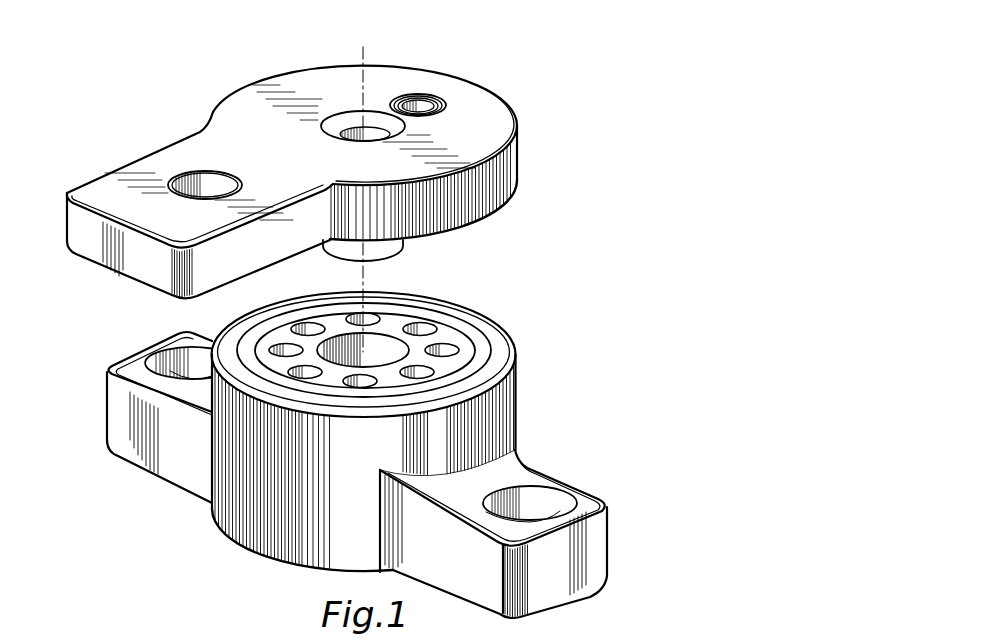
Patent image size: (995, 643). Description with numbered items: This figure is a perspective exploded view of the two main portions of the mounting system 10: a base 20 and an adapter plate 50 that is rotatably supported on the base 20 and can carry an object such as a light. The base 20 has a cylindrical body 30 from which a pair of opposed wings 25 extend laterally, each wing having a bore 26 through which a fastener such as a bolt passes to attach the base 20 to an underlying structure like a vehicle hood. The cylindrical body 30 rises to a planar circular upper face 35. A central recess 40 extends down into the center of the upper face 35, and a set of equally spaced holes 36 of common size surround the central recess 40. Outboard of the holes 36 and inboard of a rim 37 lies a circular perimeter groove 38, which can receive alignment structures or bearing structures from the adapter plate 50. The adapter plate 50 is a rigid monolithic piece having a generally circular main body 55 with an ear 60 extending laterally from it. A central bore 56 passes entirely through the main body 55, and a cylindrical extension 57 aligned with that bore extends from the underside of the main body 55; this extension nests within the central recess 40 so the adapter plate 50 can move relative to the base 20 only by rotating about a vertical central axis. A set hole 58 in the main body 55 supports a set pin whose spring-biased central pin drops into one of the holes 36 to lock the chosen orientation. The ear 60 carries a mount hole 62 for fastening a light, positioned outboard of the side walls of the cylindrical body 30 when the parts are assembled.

The mounting system 10 is at (612, 260).
The base 20 is at (233, 557).
The wings 25 is at (113, 420).
The bores 26 is at (160, 362).
The cylindrical body 30 is at (508, 412).
The upper face 35 is at (282, 335).
The holes 36 is at (447, 348).
The rim 37 is at (478, 325).
The perimeter groove 38 is at (477, 360).
The central recess 40 is at (347, 337).
The adapter plate 50 is at (508, 93).
The main body 55 is at (518, 152).
The central bore 56 is at (352, 123).
The cylindrical extension 57 is at (397, 249).
The set hole 58 is at (422, 103).
The ear 60 is at (116, 185).
The mount hole 62 is at (210, 183).